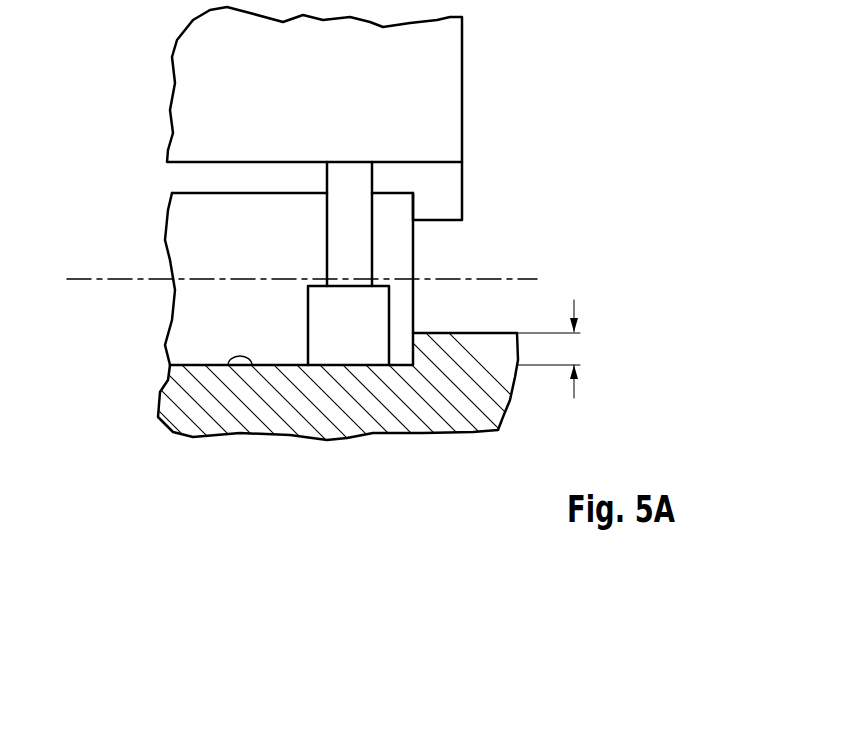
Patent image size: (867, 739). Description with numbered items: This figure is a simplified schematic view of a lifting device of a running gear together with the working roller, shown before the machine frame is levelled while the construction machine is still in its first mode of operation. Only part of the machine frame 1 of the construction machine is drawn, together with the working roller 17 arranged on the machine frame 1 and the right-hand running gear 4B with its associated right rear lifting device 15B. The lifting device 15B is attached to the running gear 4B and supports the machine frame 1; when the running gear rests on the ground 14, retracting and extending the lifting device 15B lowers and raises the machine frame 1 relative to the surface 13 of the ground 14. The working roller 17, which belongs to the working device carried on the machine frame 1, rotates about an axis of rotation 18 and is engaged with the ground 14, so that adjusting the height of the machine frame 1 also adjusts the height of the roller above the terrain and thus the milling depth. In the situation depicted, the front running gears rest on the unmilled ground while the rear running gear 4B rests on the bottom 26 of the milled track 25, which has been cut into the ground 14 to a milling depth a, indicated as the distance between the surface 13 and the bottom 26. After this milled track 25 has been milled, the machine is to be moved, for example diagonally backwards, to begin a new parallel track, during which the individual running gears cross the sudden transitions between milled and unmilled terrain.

The machine frame 1 is at (498, 95).
The right rear lifting device 15B is at (362, 208).
The working roller 17 is at (180, 220).
The axis of rotation 18 is at (77, 278).
The right-hand running gear 4B is at (358, 352).
The ground 14 is at (495, 408).
The surface of the ground 13 is at (470, 332).
The bottom of the milled track 26 is at (251, 366).
The milled track 25 is at (153, 343).
The milling depth a is at (575, 347).